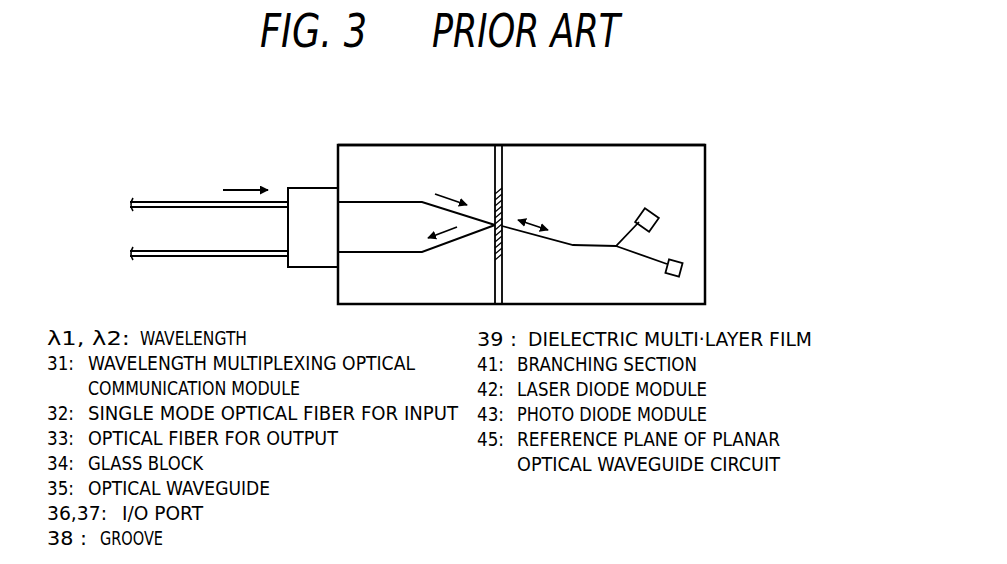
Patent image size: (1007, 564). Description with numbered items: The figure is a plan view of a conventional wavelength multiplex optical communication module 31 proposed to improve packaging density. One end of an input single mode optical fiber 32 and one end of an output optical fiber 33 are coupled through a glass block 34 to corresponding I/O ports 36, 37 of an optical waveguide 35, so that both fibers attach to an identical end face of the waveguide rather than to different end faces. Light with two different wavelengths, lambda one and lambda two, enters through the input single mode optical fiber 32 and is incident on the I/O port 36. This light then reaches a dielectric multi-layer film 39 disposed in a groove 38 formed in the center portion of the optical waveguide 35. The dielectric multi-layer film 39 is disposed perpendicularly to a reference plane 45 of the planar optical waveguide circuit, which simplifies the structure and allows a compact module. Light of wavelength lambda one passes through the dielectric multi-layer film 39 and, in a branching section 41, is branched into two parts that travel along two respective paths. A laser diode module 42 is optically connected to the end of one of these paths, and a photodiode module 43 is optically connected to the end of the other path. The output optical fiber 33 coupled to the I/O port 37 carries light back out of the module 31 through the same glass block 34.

The wavelength multiplex optical communication module 31 is at (720, 181).
The input single mode optical fiber 32 is at (187, 201).
The output optical fiber 33 is at (215, 256).
The glass block 34 is at (300, 188).
The optical waveguide 35 is at (667, 145).
The I/O port 36 is at (339, 200).
The I/O port 37 is at (340, 255).
The groove 38 is at (503, 165).
The dielectric multi-layer film 39 is at (503, 247).
The branching section 41 is at (616, 245).
The laser diode module 42 is at (644, 210).
The photodiode module 43 is at (674, 260).
The reference plane 45 is at (573, 158).